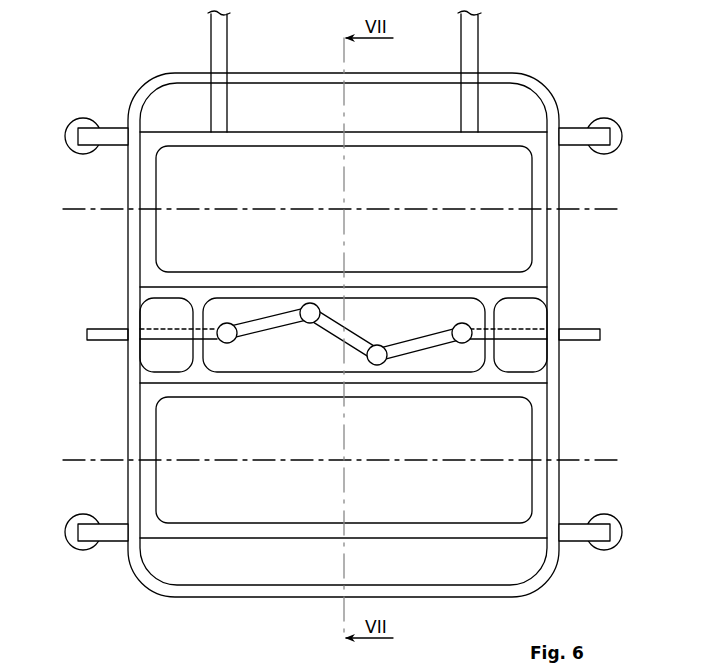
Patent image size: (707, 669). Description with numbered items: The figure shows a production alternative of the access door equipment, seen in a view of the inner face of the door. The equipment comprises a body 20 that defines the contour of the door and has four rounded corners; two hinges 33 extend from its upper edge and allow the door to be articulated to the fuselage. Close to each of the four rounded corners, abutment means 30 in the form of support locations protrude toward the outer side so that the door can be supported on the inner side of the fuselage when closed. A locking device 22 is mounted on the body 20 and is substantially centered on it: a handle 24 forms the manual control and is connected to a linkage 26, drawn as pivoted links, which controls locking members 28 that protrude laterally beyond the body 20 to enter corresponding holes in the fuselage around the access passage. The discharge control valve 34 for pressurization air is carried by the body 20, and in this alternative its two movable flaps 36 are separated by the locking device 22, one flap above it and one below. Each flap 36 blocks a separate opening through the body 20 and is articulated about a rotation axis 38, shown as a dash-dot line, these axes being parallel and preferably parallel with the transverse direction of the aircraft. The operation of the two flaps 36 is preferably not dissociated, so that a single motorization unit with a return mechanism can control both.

The body 20 is at (415, 73).
The locking device 22 is at (522, 320).
The handle 24 is at (342, 321).
The linkage 26 is at (272, 322).
The locking members 28 is at (100, 330).
The abutment means 30 is at (88, 133).
The hinges 33 is at (211, 43).
The discharge control valve 34 is at (484, 185).
The flaps 36 is at (165, 183).
The rotation axes 38 is at (286, 209).